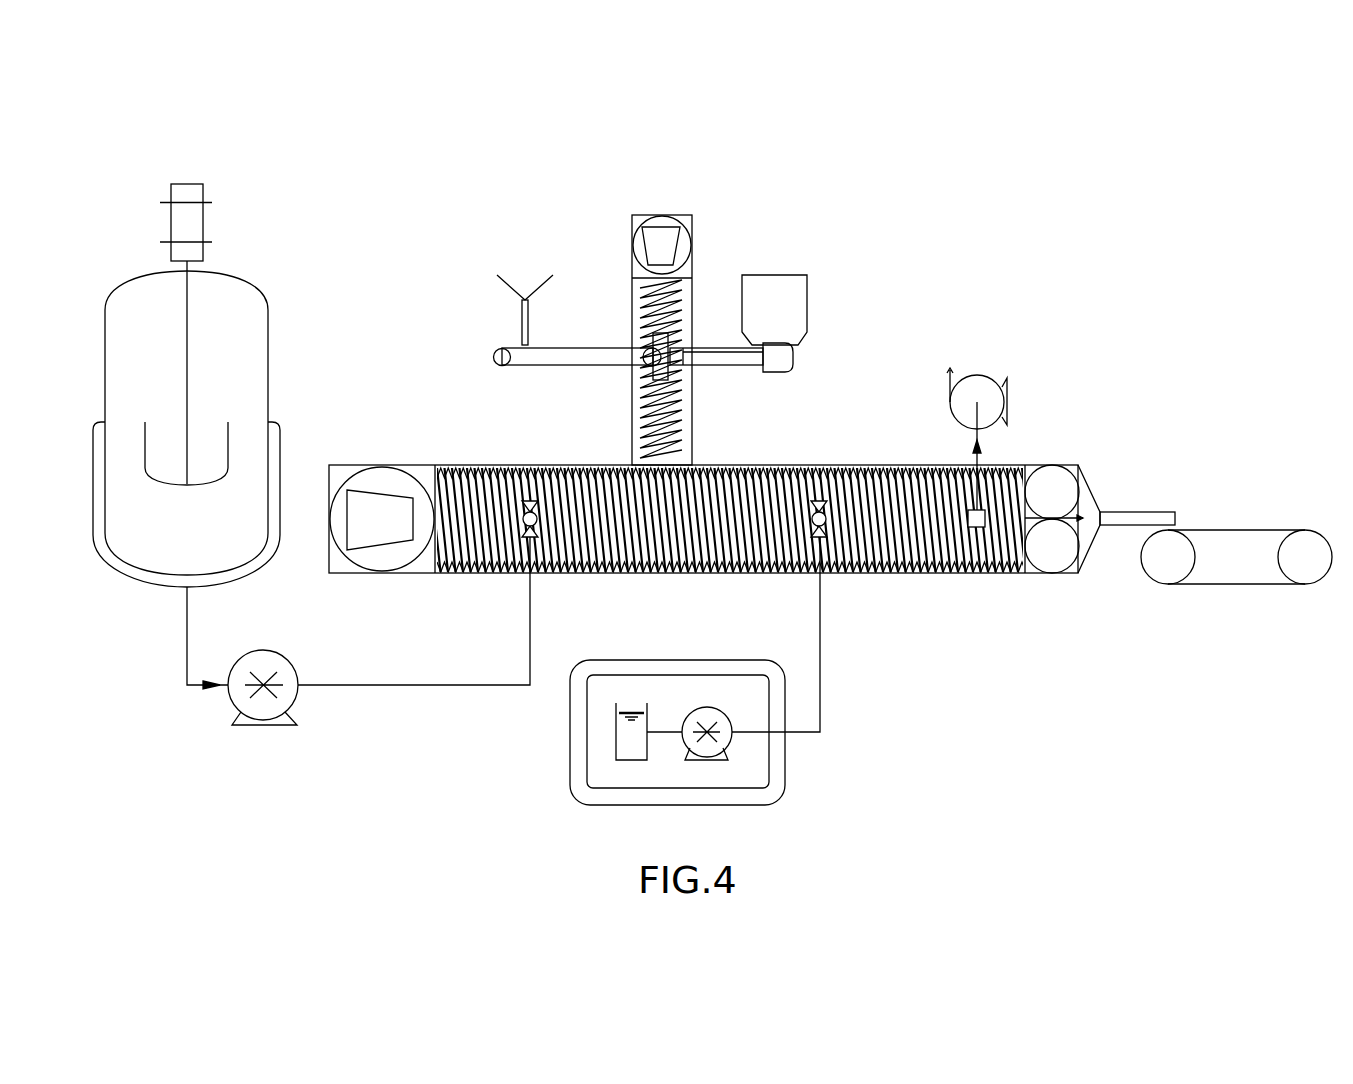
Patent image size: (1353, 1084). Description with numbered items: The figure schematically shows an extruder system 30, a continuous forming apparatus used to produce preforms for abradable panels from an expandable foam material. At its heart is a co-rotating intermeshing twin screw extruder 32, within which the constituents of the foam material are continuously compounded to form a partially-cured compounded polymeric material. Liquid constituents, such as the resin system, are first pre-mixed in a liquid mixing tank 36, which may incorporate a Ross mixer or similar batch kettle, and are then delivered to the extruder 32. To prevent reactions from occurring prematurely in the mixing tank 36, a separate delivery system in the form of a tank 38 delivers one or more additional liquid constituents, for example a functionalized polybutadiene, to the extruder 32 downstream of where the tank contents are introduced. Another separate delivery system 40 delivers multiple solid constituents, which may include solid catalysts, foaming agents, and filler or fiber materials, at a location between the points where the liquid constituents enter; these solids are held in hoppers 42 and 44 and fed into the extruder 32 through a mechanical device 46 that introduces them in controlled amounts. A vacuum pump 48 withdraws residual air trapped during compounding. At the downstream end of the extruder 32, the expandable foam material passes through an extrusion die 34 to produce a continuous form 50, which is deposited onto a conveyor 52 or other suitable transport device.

The extruder system 30 is at (970, 272).
The twin screw extruder 32 is at (432, 465).
The extrusion die 34 is at (1082, 487).
The liquid mixing tank 36 is at (241, 300).
The separate delivery system tank 38 is at (777, 777).
The separate delivery system 40 is at (623, 203).
The hopper 42 is at (503, 285).
The hopper 44 is at (805, 285).
The mechanical device 46 is at (693, 428).
The vacuum pump 48 is at (980, 377).
The continuous form 50 is at (1152, 517).
The conveyor 52 is at (1203, 578).